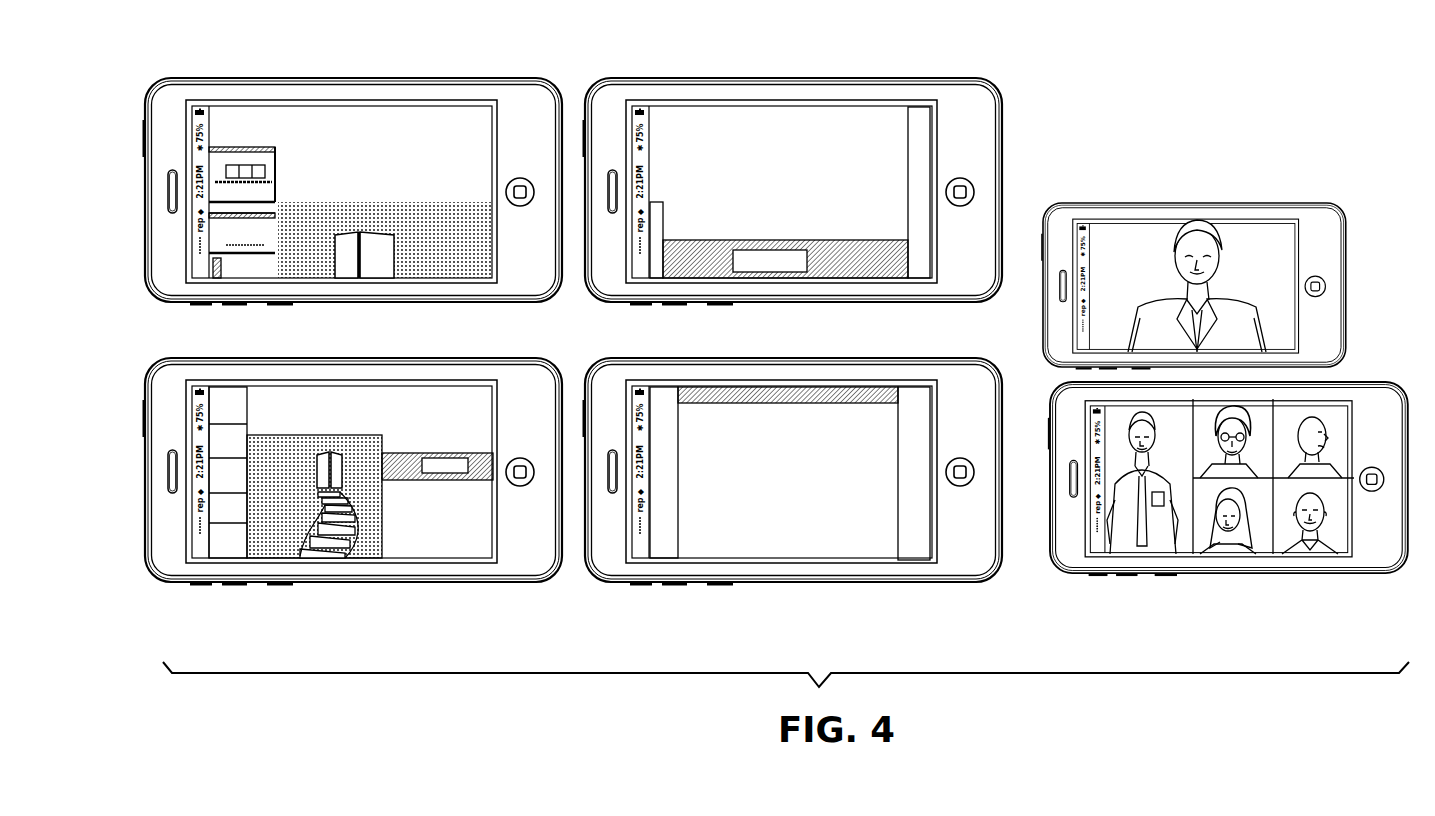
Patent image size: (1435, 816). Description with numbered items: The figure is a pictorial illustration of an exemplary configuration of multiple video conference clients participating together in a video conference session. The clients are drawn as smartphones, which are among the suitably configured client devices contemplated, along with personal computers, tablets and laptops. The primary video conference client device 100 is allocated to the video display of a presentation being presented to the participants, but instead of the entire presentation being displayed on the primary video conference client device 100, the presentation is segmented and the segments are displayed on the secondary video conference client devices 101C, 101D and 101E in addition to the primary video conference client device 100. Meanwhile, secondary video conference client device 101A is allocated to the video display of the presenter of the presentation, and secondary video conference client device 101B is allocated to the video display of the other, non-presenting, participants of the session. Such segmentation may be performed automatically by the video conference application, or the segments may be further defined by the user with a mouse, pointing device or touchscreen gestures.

The primary video conference client device 100 is at (487, 78).
The secondary video conference client device 101A is at (1286, 203).
The secondary video conference client device 101B is at (1050, 547).
The secondary video conference client device 101C is at (927, 78).
The secondary video conference client device 101D is at (487, 358).
The secondary video conference client device 101E is at (927, 358).